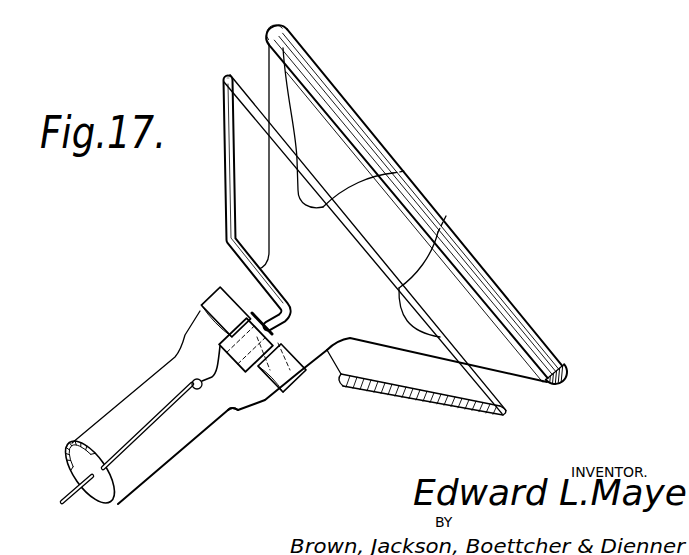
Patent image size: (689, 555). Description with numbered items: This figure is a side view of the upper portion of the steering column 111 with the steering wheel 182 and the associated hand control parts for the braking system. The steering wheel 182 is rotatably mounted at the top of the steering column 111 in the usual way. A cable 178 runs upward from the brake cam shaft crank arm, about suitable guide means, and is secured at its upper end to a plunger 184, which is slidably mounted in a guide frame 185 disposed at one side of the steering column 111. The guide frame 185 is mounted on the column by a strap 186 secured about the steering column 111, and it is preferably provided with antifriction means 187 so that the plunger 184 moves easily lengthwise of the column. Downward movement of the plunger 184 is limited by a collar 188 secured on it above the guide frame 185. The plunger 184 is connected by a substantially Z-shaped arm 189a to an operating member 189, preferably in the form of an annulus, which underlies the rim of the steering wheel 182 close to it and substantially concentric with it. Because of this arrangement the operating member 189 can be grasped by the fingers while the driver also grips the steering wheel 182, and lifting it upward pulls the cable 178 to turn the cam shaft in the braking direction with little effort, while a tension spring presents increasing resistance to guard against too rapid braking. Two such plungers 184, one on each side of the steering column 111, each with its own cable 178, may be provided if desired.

The steering column 111 is at (103, 423).
The cable 178 is at (157, 412).
The steering wheel 182 is at (270, 34).
The plunger 184 is at (235, 413).
The guide frame 185 is at (222, 328).
The strap 186 is at (213, 299).
The antifriction means 187 is at (268, 367).
The collar 188 is at (308, 380).
The operating member 189 is at (380, 263).
The Z-shaped arm 189a is at (225, 196).